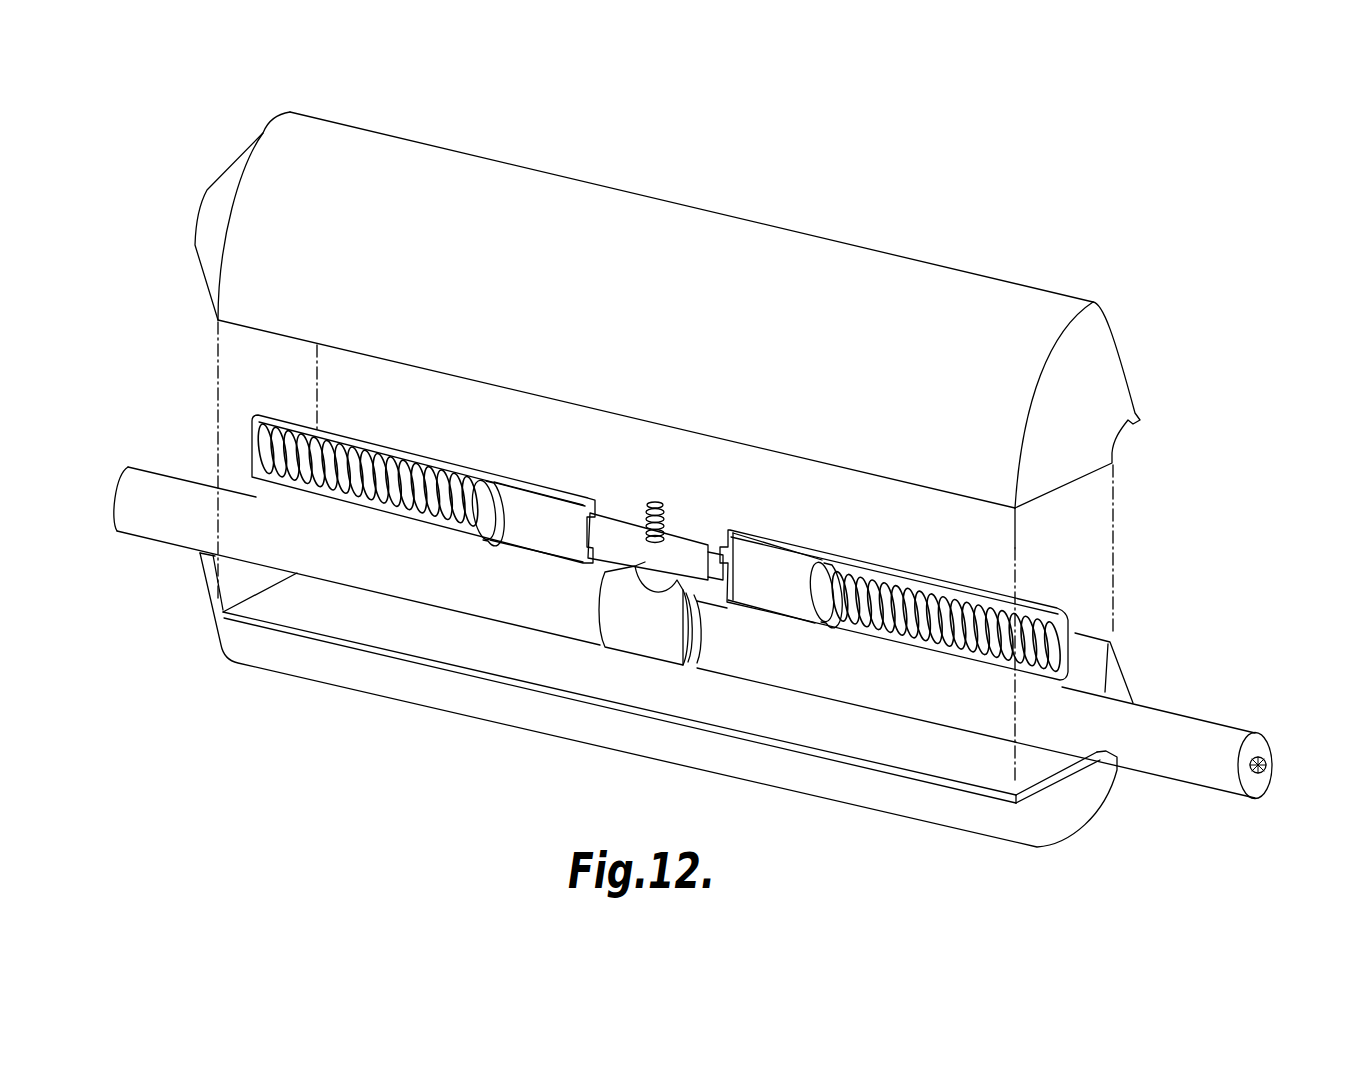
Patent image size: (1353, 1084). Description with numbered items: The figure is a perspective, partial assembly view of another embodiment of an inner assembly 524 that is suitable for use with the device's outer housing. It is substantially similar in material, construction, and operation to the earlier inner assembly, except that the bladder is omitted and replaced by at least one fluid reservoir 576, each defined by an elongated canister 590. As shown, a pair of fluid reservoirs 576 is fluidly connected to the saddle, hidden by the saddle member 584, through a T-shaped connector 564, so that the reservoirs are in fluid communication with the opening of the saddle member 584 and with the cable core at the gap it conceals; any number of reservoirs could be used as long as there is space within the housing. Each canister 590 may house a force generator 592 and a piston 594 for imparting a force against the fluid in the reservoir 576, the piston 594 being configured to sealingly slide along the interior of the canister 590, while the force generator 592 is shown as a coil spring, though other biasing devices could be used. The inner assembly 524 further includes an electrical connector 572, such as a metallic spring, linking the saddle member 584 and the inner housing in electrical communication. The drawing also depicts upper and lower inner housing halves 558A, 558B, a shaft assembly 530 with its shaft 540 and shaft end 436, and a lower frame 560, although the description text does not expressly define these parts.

The inner assembly 524 is at (1136, 268).
The upper housing shell 558A is at (203, 214).
The lower housing shell 558B is at (238, 665).
The shaft assembly 530 is at (715, 598).
The shaft 540 is at (157, 525).
The shaft end bore 436 is at (1268, 766).
The elongated canister 590 is at (523, 480).
The force generator 592 is at (373, 453).
The piston 594 is at (485, 485).
The fluid reservoir 576 is at (548, 527).
The T-shaped connector 564 is at (693, 541).
The electrical connector 572 is at (664, 511).
The saddle member 584 is at (648, 640).
The lower frame 560 is at (452, 640).